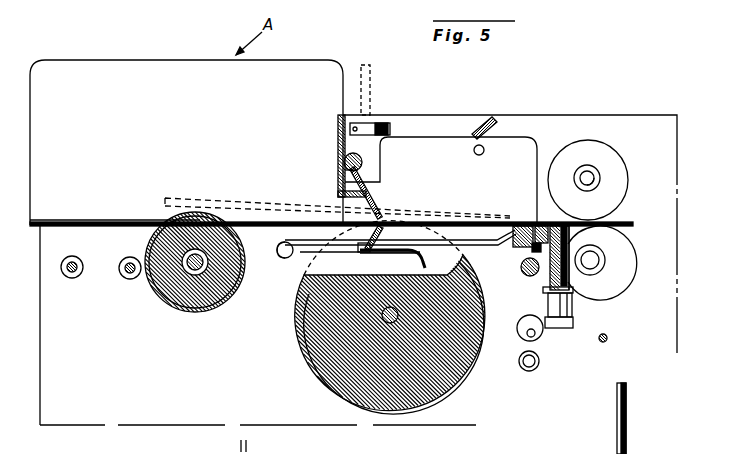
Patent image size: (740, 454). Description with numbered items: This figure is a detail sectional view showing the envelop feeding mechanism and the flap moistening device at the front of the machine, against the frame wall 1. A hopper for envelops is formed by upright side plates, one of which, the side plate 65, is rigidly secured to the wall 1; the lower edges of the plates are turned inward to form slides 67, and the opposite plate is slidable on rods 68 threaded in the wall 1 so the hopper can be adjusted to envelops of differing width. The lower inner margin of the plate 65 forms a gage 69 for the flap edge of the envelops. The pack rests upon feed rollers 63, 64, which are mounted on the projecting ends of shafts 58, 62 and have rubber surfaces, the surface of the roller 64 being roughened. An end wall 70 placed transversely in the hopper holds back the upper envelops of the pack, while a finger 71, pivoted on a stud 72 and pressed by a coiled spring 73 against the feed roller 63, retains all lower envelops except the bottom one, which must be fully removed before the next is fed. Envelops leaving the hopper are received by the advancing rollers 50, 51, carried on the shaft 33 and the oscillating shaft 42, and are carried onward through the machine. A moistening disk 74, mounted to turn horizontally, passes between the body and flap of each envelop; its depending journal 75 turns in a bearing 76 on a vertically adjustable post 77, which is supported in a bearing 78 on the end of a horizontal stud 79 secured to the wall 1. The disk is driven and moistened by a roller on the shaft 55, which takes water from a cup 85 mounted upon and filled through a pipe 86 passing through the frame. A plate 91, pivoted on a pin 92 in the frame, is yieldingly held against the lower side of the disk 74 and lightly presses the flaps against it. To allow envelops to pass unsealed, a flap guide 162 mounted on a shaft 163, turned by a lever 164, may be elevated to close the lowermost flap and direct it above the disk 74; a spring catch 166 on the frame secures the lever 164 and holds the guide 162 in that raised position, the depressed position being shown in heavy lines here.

The wall 1 is at (612, 122).
The shaft 33 is at (593, 258).
The oscillating shaft 42 is at (621, 207).
The advancing roller 50 is at (620, 262).
The advancing roller 51 is at (610, 163).
The shaft 55 is at (523, 274).
The shaft 58 is at (384, 318).
The shaft 62 is at (190, 270).
The feed roller 63 is at (451, 386).
The feed roller 64 is at (216, 302).
The side plate 65 is at (186, 142).
The slides 67 is at (68, 223).
The rods 68 is at (124, 262).
The gage 69 is at (518, 221).
The end wall 70 is at (343, 142).
The finger 71 is at (415, 201).
The stud 72 is at (350, 171).
The coiled spring 73 is at (360, 174).
The moistening disk 74 is at (623, 221).
The depending journal 75 is at (512, 240).
The bearing 76 is at (550, 278).
The vertically adjustable post 77 is at (571, 279).
The bearing 78 is at (575, 312).
The horizontal stud 79 is at (524, 335).
The cup 85 is at (608, 338).
The pipe 86 is at (540, 366).
The plate 91 is at (482, 240).
The pin 92 is at (282, 259).
The flap guide 162 is at (398, 255).
The shaft 163 is at (360, 254).
The lever 164 is at (572, 133).
The spring catch 166 is at (440, 97).